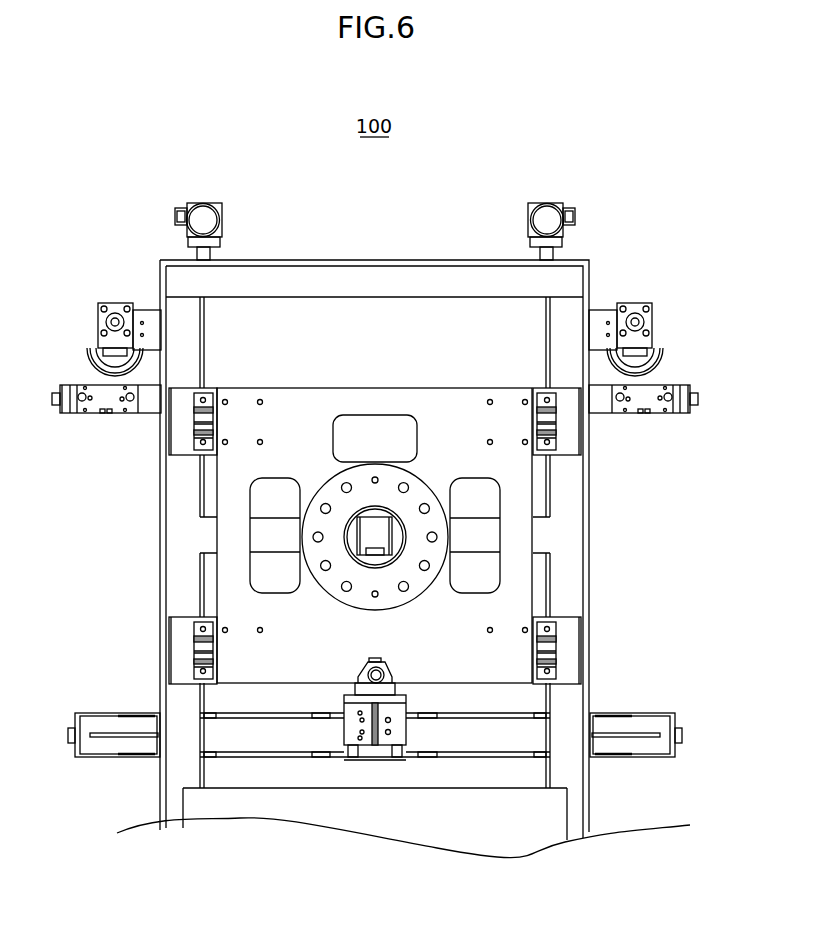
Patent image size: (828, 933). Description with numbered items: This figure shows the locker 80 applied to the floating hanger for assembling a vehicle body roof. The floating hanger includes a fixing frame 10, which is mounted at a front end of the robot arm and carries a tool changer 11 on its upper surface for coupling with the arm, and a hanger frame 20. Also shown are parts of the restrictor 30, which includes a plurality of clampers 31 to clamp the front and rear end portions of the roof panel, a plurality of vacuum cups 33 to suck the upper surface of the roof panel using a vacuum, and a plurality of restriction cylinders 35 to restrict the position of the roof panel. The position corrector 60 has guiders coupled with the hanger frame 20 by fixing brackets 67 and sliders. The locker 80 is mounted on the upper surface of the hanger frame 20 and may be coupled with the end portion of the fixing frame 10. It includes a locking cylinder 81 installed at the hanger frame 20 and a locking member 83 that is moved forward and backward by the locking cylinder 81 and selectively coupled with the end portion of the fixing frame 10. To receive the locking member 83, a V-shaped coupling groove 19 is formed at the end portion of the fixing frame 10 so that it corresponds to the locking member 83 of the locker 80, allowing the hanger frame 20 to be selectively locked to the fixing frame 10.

The fixing frame 10 is at (275, 610).
The tool changer 11 is at (427, 525).
The coupling groove 19 is at (377, 654).
The hanger frame 20 is at (568, 570).
The restrictor 30 is at (620, 274).
The clamper 31 is at (562, 221).
The vacuum cup 33 is at (666, 354).
The restriction cylinder 35 is at (653, 414).
The position corrector 60 is at (100, 778).
The fixing bracket 67 is at (122, 722).
The locker 80 is at (367, 772).
The locking cylinder 81 is at (407, 730).
The locking member 83 is at (388, 671).